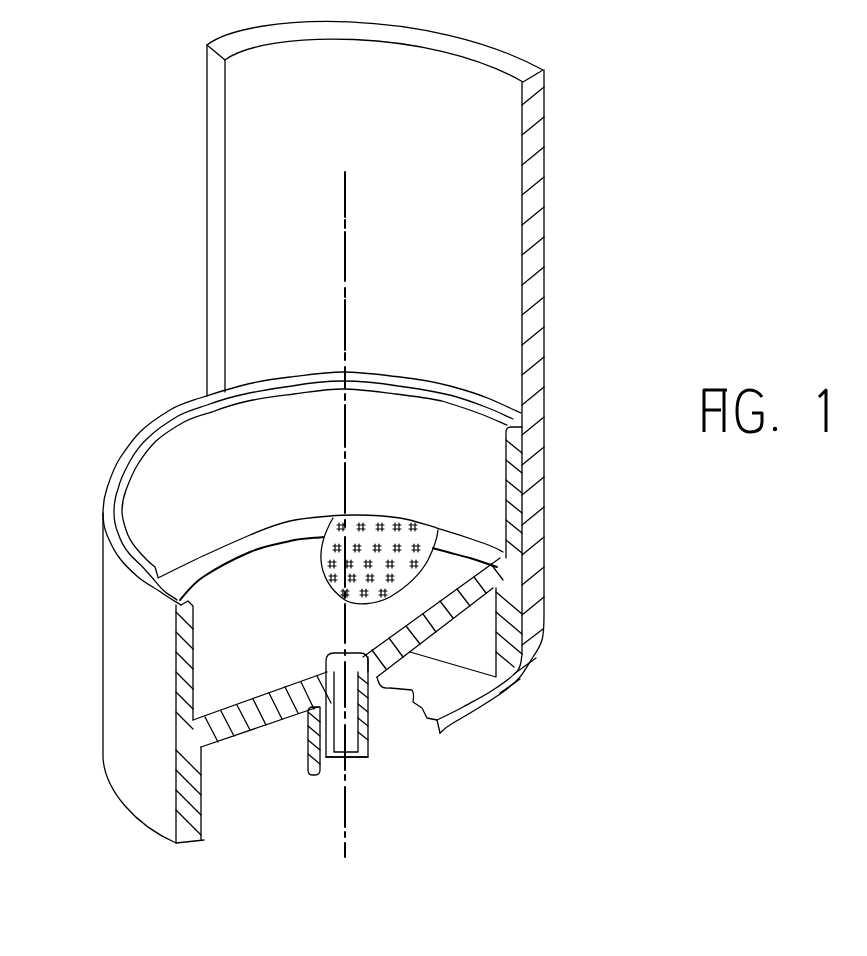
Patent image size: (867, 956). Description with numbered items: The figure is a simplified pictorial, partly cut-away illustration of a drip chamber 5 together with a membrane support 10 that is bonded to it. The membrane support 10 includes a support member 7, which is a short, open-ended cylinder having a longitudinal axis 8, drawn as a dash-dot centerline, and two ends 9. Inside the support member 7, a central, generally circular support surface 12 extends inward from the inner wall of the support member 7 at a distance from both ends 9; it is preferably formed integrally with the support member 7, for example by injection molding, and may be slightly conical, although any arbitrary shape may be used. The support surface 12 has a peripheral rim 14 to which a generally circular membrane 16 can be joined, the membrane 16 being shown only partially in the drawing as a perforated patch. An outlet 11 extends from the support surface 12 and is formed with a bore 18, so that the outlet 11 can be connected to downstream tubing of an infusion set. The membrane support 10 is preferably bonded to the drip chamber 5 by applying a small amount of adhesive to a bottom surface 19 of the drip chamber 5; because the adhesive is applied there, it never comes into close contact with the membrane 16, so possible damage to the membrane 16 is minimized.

The drip chamber 5 is at (537, 438).
The support member 7 is at (417, 425).
The longitudinal axis 8 is at (345, 197).
The ends 9 is at (178, 416).
The membrane support 10 is at (479, 498).
The outlet 11 is at (326, 762).
The support surface 12 is at (242, 688).
The peripheral rim 14 is at (205, 560).
The membrane 16 is at (321, 558).
The bore 18 is at (335, 662).
The bottom surface 19 is at (452, 693).